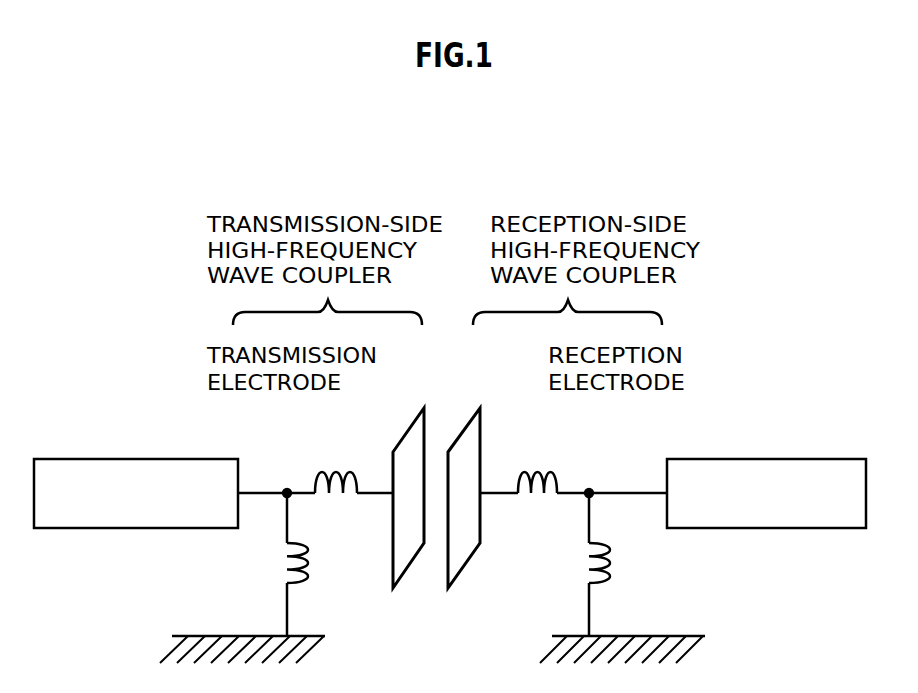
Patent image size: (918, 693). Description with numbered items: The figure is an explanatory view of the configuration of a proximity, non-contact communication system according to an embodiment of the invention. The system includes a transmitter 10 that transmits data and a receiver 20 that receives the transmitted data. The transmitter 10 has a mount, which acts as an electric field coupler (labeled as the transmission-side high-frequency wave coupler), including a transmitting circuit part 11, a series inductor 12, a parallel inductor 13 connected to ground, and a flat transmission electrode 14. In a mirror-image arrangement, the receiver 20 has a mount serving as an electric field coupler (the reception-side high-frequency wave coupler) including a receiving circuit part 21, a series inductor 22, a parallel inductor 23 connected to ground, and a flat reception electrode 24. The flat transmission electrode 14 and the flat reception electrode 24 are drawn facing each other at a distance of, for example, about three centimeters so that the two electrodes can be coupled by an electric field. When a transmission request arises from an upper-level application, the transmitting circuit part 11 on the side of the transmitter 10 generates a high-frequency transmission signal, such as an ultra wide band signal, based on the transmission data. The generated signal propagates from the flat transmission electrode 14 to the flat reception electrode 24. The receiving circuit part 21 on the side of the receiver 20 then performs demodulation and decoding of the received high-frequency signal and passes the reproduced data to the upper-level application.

The transmitter 10 is at (143, 315).
The transmitting circuit part 11 is at (110, 459).
The series inductor 12 is at (335, 472).
The parallel inductor 13 is at (306, 578).
The flat transmission electrode 14 is at (424, 408).
The receiver 20 is at (785, 315).
The receiving circuit part 21 is at (783, 459).
The series inductor 22 is at (540, 472).
The parallel inductor 23 is at (608, 578).
The flat reception electrode 24 is at (480, 408).